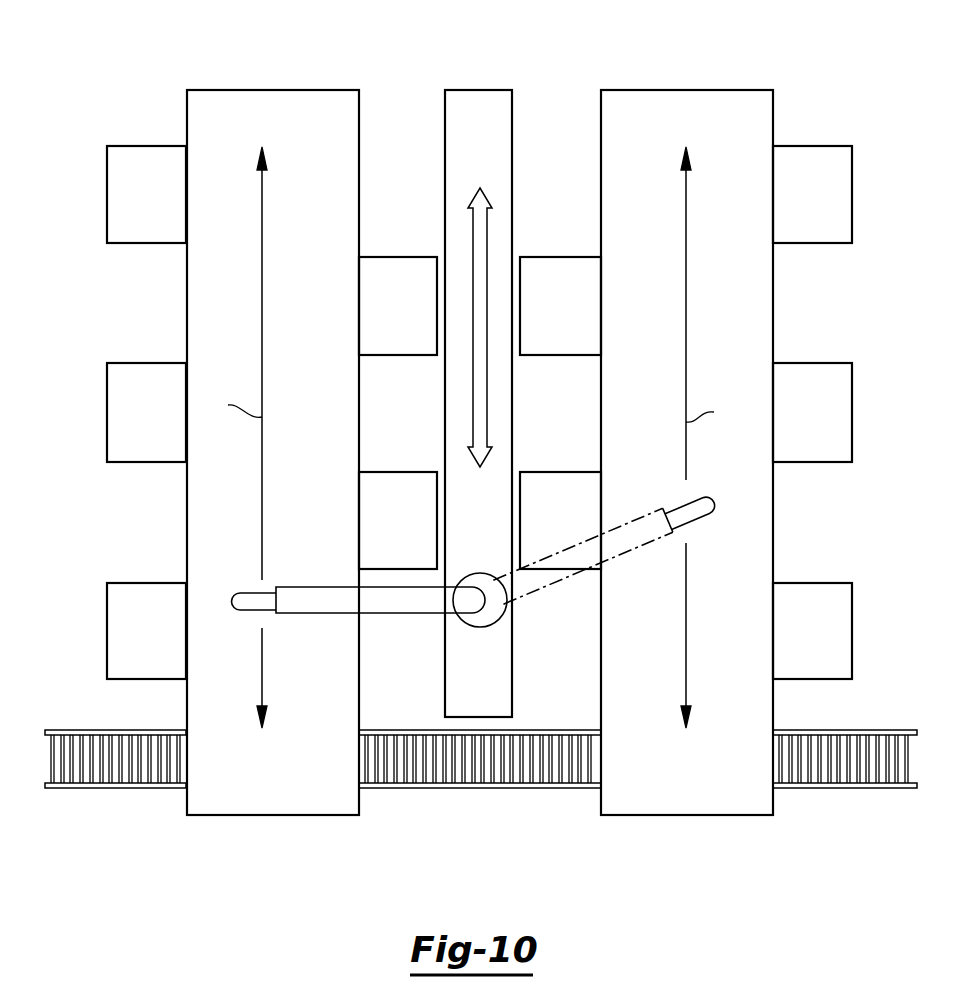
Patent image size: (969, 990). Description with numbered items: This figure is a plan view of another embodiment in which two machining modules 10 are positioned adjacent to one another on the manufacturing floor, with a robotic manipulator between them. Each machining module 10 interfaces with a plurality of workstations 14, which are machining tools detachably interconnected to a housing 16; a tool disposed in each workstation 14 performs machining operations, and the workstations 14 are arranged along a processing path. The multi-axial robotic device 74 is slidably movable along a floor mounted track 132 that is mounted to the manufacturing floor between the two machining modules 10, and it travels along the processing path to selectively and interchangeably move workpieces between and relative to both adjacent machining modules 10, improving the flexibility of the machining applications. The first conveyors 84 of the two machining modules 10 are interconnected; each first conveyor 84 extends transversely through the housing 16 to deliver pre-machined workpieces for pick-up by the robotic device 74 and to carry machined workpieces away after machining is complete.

The machining module 10 is at (100, 272).
The workstation 14 is at (137, 164).
The housing 16 is at (262, 801).
The multi-axial robotic device 74 is at (331, 594).
The first conveyor 84 is at (96, 789).
The floor mounted track 132 is at (486, 97).